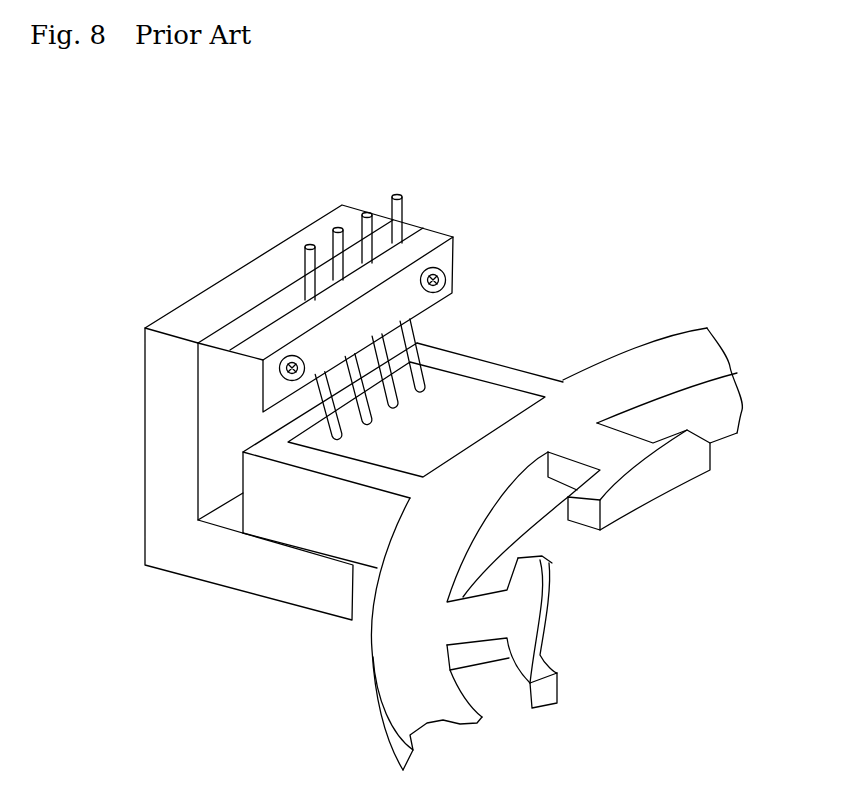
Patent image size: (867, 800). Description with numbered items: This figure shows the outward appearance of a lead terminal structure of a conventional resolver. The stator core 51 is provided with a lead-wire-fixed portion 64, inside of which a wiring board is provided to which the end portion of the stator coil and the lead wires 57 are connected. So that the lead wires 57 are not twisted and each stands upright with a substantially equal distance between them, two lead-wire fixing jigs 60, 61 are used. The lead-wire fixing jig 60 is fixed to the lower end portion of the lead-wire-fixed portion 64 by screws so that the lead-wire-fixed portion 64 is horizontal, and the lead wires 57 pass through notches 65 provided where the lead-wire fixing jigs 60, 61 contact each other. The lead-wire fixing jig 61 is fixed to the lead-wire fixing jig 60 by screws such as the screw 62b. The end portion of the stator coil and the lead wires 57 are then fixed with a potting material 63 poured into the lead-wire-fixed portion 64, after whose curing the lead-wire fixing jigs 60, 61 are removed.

The stator core 51 is at (697, 362).
The lead wires 57 is at (428, 368).
The lead-wire fixing jig 60 is at (308, 590).
The lead-wire fixing jig 61 is at (438, 235).
The screw 62b is at (282, 358).
The potting material 63 is at (493, 403).
The lead-wire-fixed portion 64 is at (542, 385).
The notches 65 is at (392, 200).